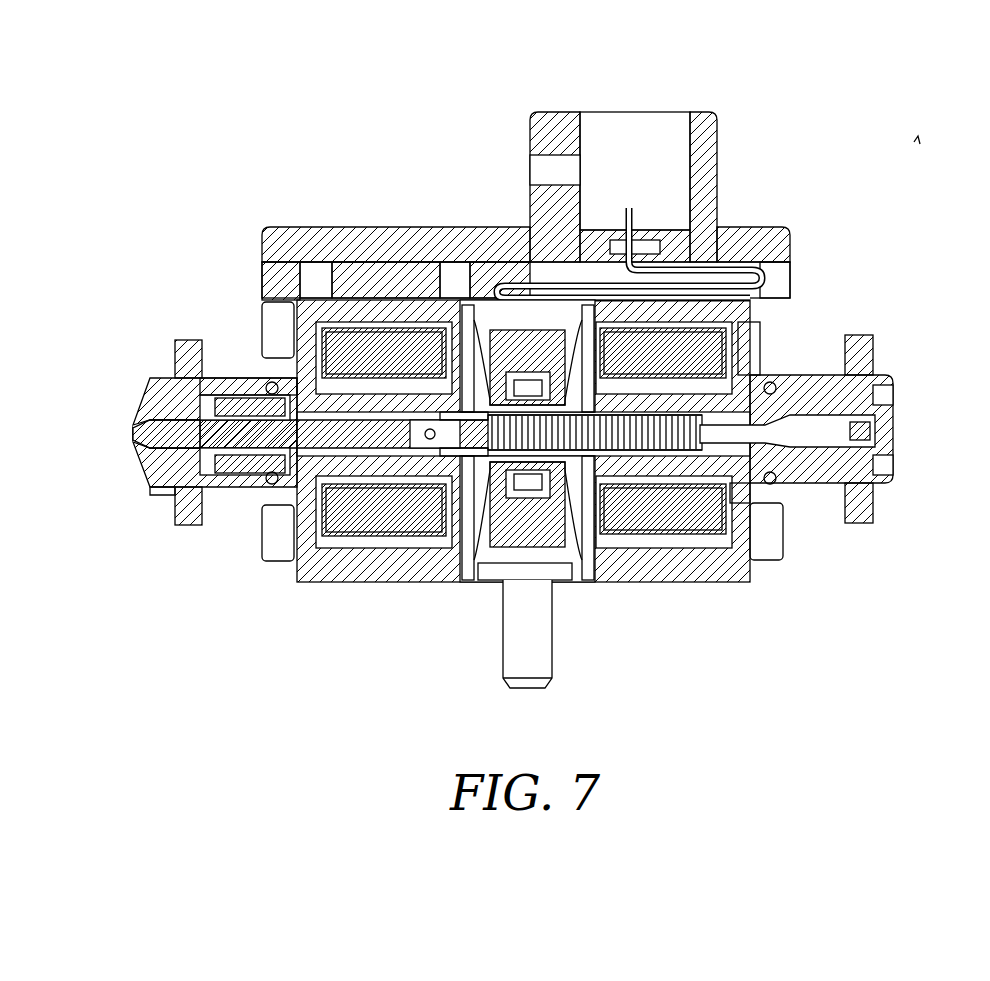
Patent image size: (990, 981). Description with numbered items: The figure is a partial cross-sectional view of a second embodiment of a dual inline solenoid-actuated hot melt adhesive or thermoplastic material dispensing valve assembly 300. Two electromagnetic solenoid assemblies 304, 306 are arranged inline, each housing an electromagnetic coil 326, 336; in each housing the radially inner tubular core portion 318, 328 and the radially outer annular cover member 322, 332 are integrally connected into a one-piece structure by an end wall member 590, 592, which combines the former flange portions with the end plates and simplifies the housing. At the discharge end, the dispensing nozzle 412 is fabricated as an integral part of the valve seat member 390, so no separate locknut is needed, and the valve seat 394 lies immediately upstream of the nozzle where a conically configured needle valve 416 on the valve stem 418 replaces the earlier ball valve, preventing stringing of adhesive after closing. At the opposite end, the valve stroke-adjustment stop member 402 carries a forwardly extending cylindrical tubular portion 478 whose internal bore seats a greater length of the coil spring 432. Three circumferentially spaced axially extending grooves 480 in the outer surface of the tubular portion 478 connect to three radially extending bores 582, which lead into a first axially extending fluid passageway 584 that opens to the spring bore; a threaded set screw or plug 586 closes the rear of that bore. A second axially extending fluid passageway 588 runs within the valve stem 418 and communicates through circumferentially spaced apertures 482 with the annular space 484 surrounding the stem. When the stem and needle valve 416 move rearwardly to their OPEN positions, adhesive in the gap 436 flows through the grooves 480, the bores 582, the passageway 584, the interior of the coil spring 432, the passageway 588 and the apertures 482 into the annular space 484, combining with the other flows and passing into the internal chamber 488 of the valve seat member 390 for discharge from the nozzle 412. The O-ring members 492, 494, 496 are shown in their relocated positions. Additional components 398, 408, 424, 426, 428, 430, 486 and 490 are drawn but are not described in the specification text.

The dual inline solenoid-actuated dispensing valve assembly 300 is at (914, 142).
The electromagnetic solenoid assembly 304 is at (470, 575).
The electromagnetic solenoid assembly 306 is at (605, 250).
The tubular core portion 318 is at (340, 540).
The annular cover member 322 is at (400, 300).
The electromagnetic coil 326 is at (390, 500).
The tubular core portion 328 is at (690, 480).
The annular cover member 332 is at (690, 240).
The electromagnetic coil 336 is at (640, 520).
The valve seat member 390 is at (240, 395).
The valve seat 394 is at (150, 430).
The nozzle flange 398 is at (190, 525).
The valve stroke-adjustment stop member 402 is at (858, 522).
The outlet fitting 408 is at (858, 350).
The dispensing nozzle 412 is at (160, 458).
The needle valve 416 is at (185, 470).
The valve stem 418 is at (330, 300).
The upper left coil 424 is at (380, 345).
The upper right coil 426 is at (700, 345).
The upper rotor 428 is at (490, 560).
The lower rotor 430 is at (560, 570).
The coil spring 432 is at (742, 560).
The gap 436 is at (530, 285).
The tubular portion 478 is at (620, 500).
The axially extending grooves 480 is at (730, 300).
The apertures 482 is at (400, 470).
The annular space 484 is at (345, 420).
The o-ring 486 is at (265, 382).
The internal chamber 488 is at (260, 490).
The o-ring 490 is at (270, 484).
The O-ring member 492 is at (330, 250).
The O-ring member 494 is at (790, 270).
The O-ring member 496 is at (800, 495).
The radially extending bores 582 is at (785, 380).
The first axially extending fluid passageway 584 is at (760, 520).
The threaded set screw or plug 586 is at (822, 430).
The second axially extending fluid passageway 588 is at (420, 450).
The end wall member 590 is at (305, 560).
The end wall member 592 is at (790, 490).